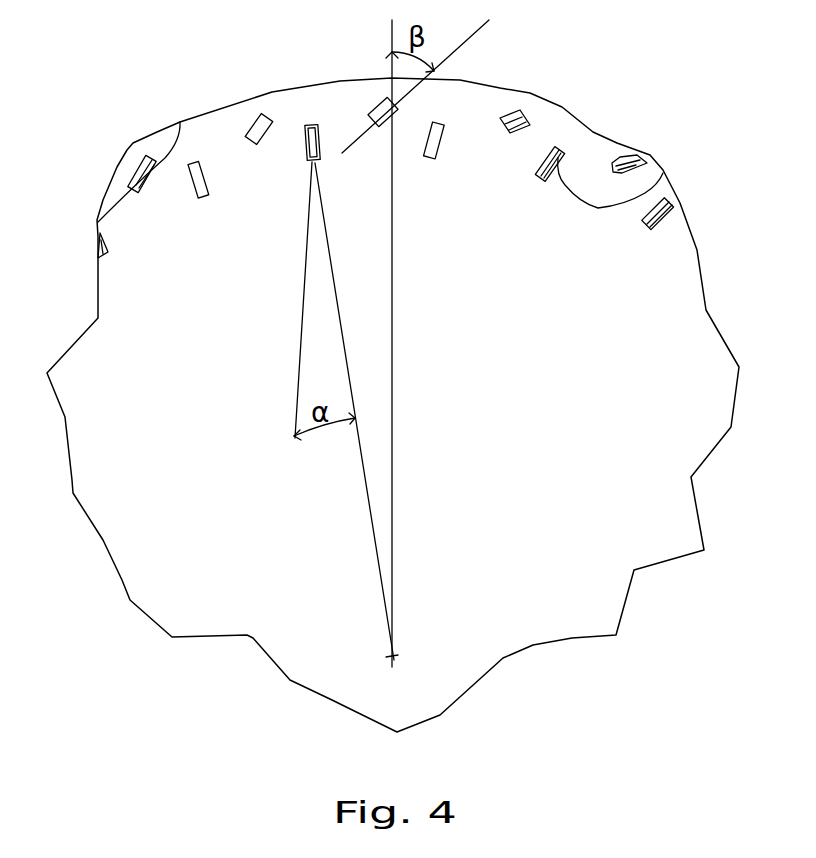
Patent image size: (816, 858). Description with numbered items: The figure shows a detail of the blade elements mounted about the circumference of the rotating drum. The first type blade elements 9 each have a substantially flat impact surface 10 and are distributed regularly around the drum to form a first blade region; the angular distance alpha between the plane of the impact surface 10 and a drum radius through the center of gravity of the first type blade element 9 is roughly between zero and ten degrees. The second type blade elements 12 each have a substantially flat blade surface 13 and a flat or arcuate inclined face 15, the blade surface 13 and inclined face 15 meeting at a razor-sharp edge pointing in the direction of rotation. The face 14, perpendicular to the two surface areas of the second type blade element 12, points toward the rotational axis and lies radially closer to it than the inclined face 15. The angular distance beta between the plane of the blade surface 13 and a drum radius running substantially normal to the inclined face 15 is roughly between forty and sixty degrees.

The first type blade element 9 is at (560, 150).
The impact surface 10 is at (658, 178).
The second type blade element 12 is at (512, 112).
The blade surface 13 is at (179, 122).
The face 14 is at (98, 223).
The inclined face 15 is at (264, 116).